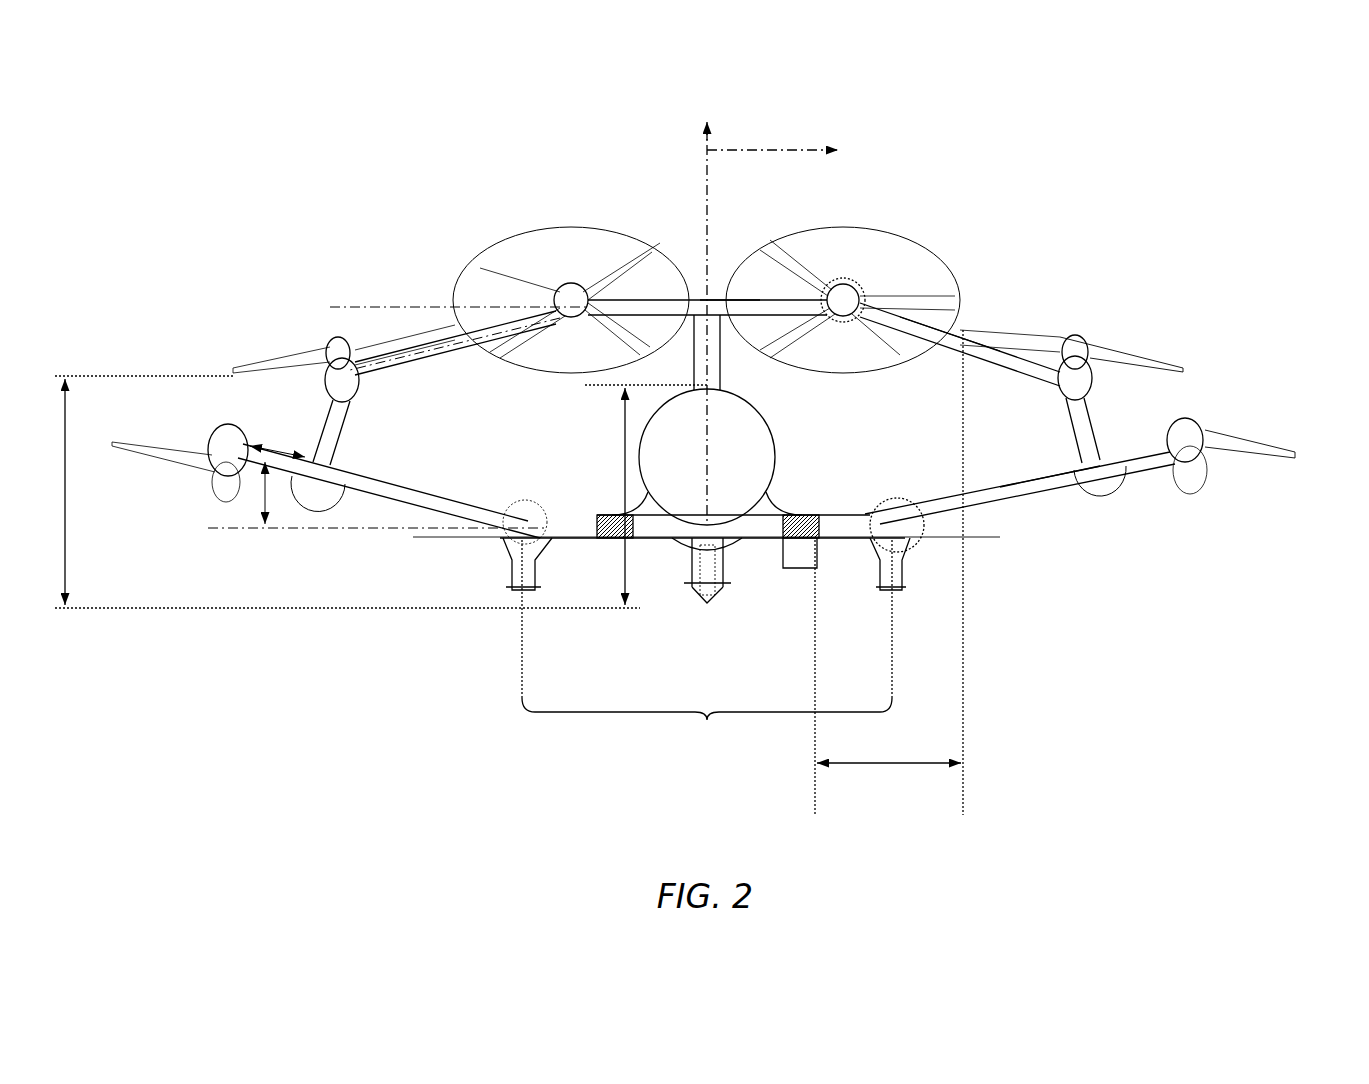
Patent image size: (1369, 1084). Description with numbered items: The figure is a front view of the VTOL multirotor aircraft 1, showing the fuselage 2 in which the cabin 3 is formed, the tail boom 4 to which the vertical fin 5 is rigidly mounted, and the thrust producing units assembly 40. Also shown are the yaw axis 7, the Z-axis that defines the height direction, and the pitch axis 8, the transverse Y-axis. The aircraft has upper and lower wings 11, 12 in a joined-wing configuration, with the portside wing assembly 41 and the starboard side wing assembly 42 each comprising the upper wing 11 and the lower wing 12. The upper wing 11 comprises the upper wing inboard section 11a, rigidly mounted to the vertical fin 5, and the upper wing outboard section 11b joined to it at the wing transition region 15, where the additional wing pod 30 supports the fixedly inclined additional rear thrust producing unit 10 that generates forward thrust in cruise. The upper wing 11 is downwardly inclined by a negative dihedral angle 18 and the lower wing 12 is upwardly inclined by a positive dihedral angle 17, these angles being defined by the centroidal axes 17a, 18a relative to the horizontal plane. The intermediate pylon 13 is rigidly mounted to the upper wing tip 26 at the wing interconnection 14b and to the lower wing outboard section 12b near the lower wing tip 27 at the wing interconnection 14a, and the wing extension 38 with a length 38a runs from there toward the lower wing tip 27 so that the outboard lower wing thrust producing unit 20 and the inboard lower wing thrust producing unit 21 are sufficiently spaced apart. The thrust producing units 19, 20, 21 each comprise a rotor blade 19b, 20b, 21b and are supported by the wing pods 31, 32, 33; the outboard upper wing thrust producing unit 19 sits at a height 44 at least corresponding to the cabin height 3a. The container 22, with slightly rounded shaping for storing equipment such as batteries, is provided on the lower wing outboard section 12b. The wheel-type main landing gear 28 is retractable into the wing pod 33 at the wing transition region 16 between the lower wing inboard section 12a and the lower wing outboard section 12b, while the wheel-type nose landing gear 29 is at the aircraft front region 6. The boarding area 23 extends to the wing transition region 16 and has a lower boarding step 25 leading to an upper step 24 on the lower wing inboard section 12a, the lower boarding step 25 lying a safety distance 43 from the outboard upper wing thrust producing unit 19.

The VTOL multirotor aircraft 1 is at (1022, 155).
The fuselage 2 is at (733, 548).
The cabin 3 is at (746, 443).
The cabin height 3a is at (624, 452).
The tail boom 4 is at (690, 386).
The vertical fin 5 is at (720, 345).
The aircraft front region 6 is at (696, 541).
The yaw axis 7 is at (707, 306).
The pitch axis 8 is at (772, 150).
The additional rear thrust producing unit 10 is at (812, 224).
The upper wing 11 is at (660, 316).
The upper wing inboard section 11a is at (749, 306).
The upper wing outboard section 11b is at (926, 333).
The lower wing 12 is at (582, 539).
The lower wing inboard section 12a is at (840, 541).
The lower wing outboard section 12b is at (1066, 552).
The intermediate pylon 13 is at (1088, 422).
The wing interconnection 14a is at (1092, 462).
The wing interconnection 14b is at (1058, 394).
The wing transition region 15 is at (846, 280).
The wing transition region 16 is at (912, 505).
The positive dihedral angle 17 is at (262, 495).
The centroidal axis 17a is at (380, 474).
The negative dihedral angle 18 is at (384, 362).
The centroidal axis 18a is at (426, 358).
The outboard upper wing thrust producing unit 19 is at (1122, 348).
The rotor blade 19b is at (1150, 363).
The outboard lower wing thrust producing unit 20 is at (1232, 479).
The rotor blade 20b is at (1283, 463).
The inboard lower wing thrust producing unit 21 is at (946, 541).
The rotor blade 21b is at (1000, 540).
The container 22 is at (1106, 505).
The boarding area 23 is at (697, 645).
The upper step 24 is at (610, 512).
The lower boarding step 25 is at (798, 568).
The upper wing tip 26 is at (1096, 380).
The lower wing tip 27 is at (1243, 453).
The wheel-type main landing gear 28 is at (882, 598).
The wheel-type nose landing gear 29 is at (708, 590).
The additional wing pod 30 is at (560, 292).
The wing pod 31 is at (1063, 383).
The wing pod 32 is at (1210, 441).
The wing pod 33 is at (893, 505).
The wing extension 38 is at (257, 458).
The length 38a is at (293, 450).
The thrust producing units assembly 40 is at (465, 243).
The portside wing assembly 41 is at (452, 323).
The starboard side wing assembly 42 is at (966, 336).
The safety distance 43 is at (860, 765).
The height 44 is at (68, 560).